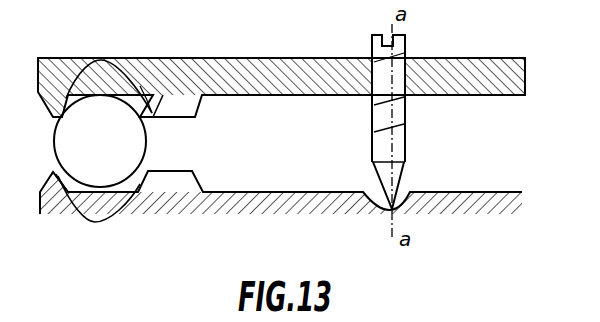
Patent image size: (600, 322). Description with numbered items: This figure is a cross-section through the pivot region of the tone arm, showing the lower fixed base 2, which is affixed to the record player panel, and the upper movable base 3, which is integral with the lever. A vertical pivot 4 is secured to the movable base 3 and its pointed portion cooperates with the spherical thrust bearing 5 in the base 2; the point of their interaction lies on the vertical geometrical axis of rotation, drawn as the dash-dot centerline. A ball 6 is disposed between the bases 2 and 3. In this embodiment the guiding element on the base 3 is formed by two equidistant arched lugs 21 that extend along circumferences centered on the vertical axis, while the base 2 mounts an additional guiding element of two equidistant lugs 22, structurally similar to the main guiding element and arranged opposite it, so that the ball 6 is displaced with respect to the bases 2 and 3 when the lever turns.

The lower fixed base 2 is at (203, 196).
The upper movable base 3 is at (257, 68).
The vertical pivot 4 is at (402, 55).
The thrust bearing 5 is at (408, 195).
The ball 6 is at (133, 150).
The arched lugs 21 is at (100, 60).
The lugs 22 is at (95, 222).